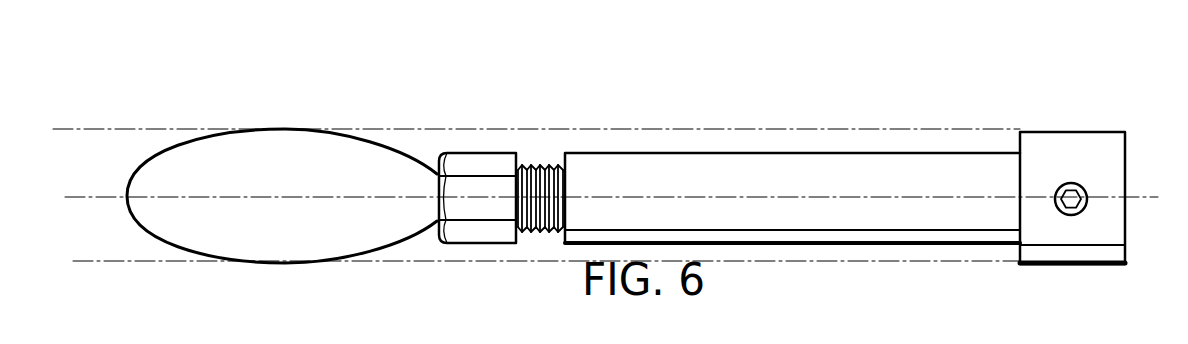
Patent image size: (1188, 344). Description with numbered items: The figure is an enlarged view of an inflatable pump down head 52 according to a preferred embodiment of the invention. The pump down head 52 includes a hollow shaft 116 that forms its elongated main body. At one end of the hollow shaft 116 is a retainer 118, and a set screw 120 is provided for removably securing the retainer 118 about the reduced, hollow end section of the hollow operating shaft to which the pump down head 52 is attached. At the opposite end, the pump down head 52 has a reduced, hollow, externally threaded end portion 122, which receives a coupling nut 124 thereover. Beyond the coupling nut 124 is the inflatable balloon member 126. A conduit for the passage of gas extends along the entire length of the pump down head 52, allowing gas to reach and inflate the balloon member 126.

The pump down head 52 is at (652, 163).
The hollow shaft 116 is at (670, 187).
The retainer 118 is at (1057, 152).
The set screw 120 is at (1086, 193).
The reduced, hollow, externally threaded end portion 122 is at (540, 172).
The coupling nut 124 is at (475, 197).
The inflatable balloon member 126 is at (329, 167).